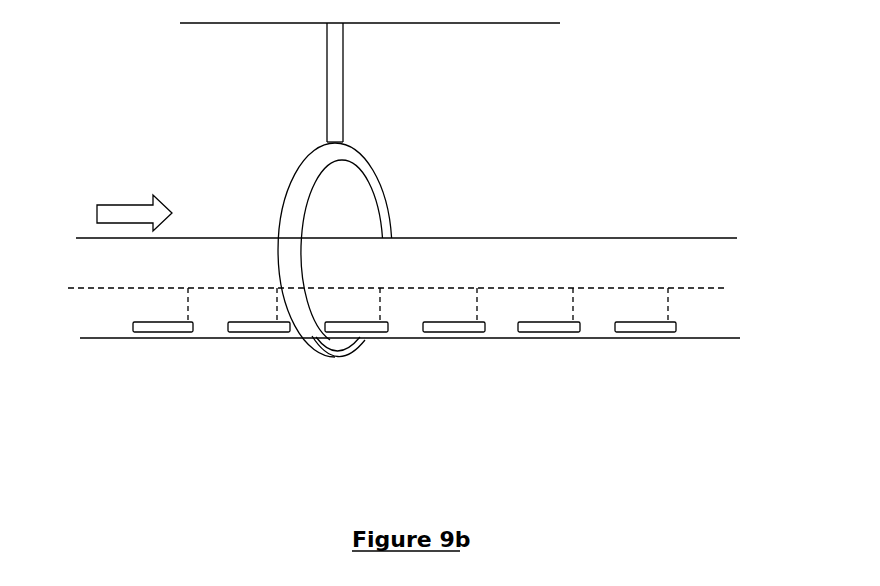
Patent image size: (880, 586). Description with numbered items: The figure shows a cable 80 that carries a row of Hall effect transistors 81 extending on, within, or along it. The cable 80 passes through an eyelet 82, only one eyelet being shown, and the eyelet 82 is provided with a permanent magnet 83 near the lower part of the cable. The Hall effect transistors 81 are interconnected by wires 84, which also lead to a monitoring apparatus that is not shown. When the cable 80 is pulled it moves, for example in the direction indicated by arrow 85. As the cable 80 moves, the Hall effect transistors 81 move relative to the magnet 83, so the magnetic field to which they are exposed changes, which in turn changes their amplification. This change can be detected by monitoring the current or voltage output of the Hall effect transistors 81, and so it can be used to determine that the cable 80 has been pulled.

The cable 80 is at (700, 258).
The Hall effect transistors 81 is at (260, 329).
The eyelet 82 is at (348, 152).
The permanent magnet 83 is at (342, 350).
The wires 84 is at (505, 287).
The arrow 85 is at (115, 212).